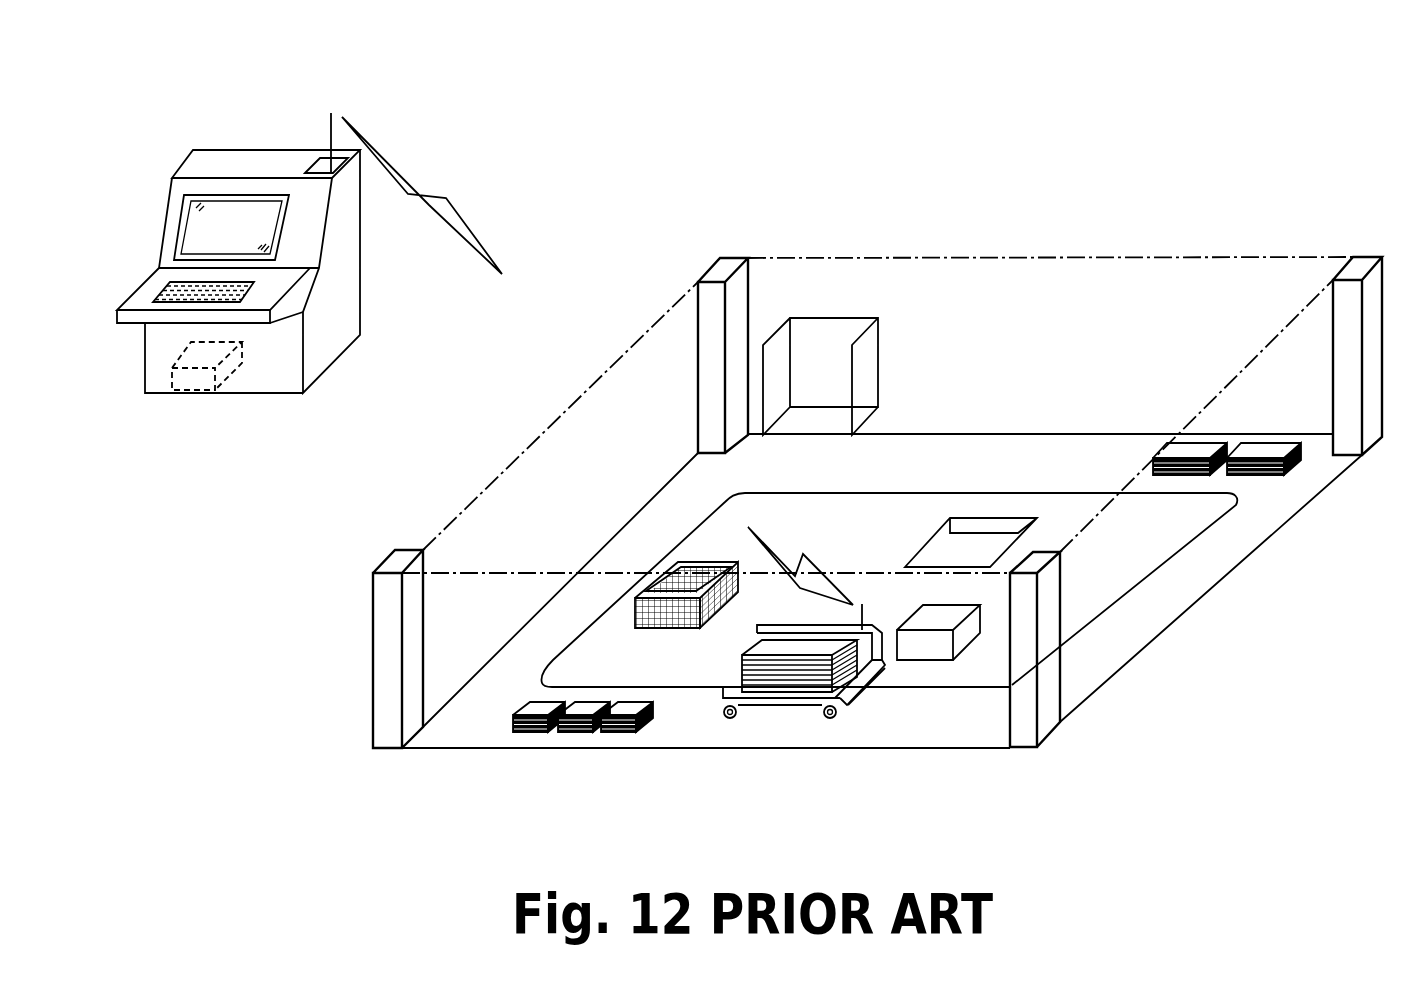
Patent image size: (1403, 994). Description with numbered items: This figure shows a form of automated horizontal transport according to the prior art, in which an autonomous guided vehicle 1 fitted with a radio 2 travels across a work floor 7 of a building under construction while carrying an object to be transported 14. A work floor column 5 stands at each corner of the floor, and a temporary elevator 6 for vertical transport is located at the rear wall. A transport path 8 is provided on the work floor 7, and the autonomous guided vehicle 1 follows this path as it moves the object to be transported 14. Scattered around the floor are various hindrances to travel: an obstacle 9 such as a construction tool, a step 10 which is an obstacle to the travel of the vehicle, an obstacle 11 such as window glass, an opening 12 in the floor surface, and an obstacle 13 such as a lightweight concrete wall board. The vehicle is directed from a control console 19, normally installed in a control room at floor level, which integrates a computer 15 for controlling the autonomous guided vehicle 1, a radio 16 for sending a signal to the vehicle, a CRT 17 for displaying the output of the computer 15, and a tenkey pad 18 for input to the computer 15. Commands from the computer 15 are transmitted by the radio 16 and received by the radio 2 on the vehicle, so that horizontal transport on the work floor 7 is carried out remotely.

The autonomous guided vehicle 1 is at (807, 708).
The radio 2 is at (863, 613).
The work floor column 5 is at (1064, 688).
The temporary elevator 6 is at (823, 318).
The work floor 7 is at (1035, 453).
The transport path 8 is at (940, 492).
The obstacle 9 is at (700, 562).
The step 10 is at (920, 661).
The obstacle 11 is at (533, 733).
The opening 12 is at (920, 543).
The obstacle 13 is at (1173, 457).
The object to be transported 14 is at (773, 693).
The computer 15 is at (188, 397).
The radio 16 is at (329, 135).
The CRT 17 is at (221, 201).
The tenkey pad 18 is at (244, 302).
The control console 19 is at (361, 313).